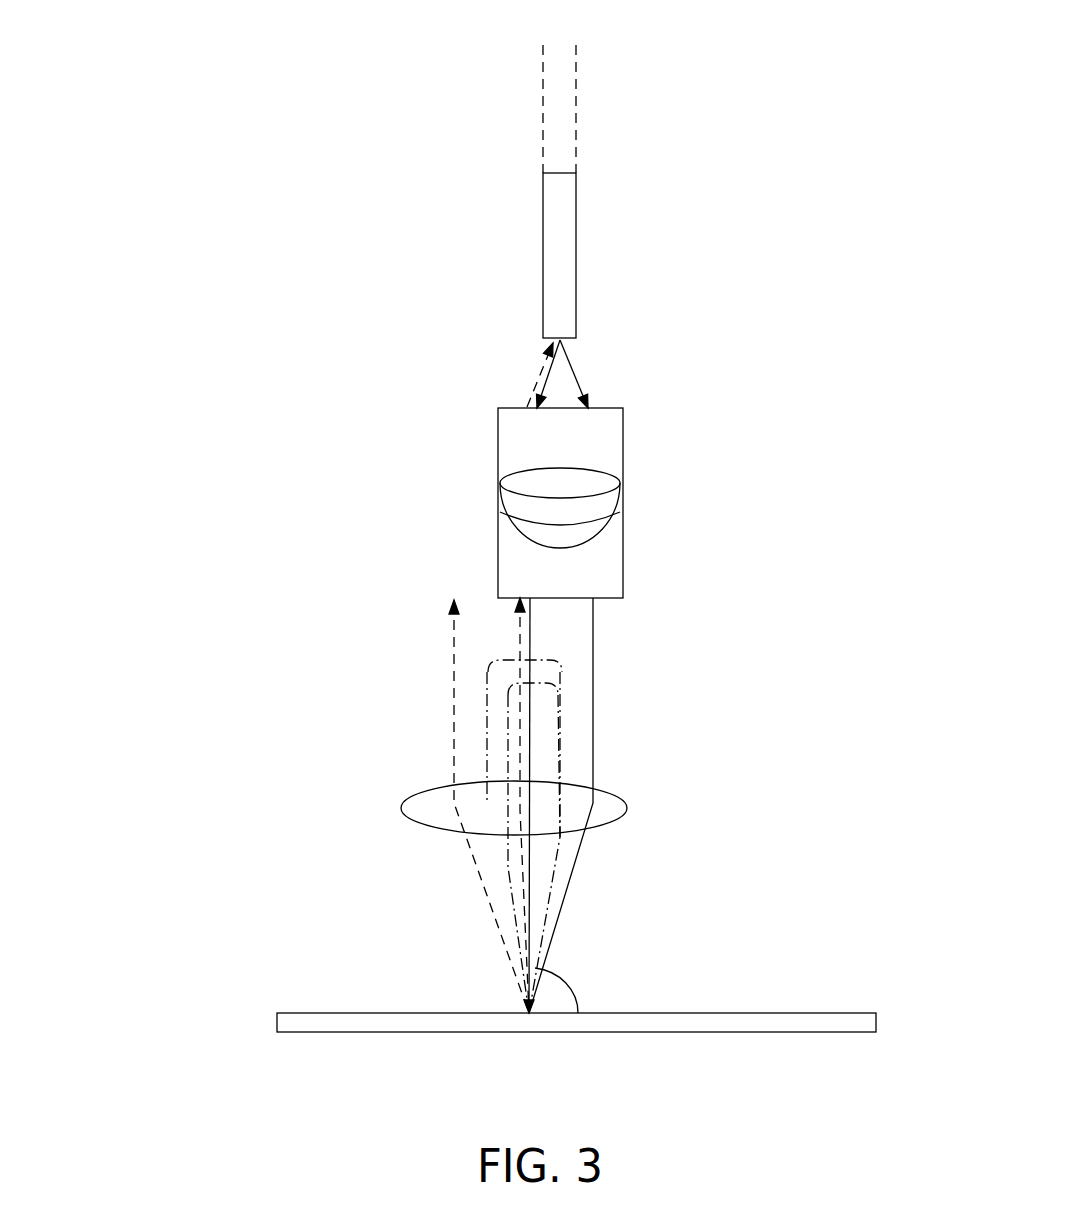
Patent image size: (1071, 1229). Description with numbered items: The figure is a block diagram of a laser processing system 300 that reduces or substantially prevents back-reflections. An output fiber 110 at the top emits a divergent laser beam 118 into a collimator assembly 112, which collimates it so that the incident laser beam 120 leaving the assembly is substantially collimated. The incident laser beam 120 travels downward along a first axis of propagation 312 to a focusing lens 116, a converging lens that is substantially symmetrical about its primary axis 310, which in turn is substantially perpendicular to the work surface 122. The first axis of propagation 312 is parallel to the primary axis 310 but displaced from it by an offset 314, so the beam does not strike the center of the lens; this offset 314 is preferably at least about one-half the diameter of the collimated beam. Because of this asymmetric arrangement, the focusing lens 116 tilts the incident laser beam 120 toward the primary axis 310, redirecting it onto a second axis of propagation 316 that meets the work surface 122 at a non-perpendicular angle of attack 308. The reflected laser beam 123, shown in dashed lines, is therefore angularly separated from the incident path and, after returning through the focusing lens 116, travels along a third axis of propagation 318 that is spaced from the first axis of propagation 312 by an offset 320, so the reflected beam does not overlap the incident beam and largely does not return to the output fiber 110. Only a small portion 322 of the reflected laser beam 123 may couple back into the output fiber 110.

The laser processing system 300 is at (336, 122).
The output fiber 110 is at (576, 265).
The divergent laser beam 118 is at (582, 358).
The small portion of the reflected laser beam 322 is at (535, 382).
The collimator assembly 112 is at (623, 453).
The incident laser beam 120 is at (593, 618).
The offset 320 is at (523, 663).
The offset 314 is at (530, 677).
The third axis of propagation 318 is at (487, 707).
The first axis of propagation 312 is at (560, 721).
The primary axis 310 is at (508, 860).
The second axis of propagation 316 is at (553, 863).
The focusing lens 116 is at (417, 800).
The reflected laser beam 123 is at (483, 895).
The work surface 122 is at (395, 1013).
The angle of attack 308 is at (570, 980).